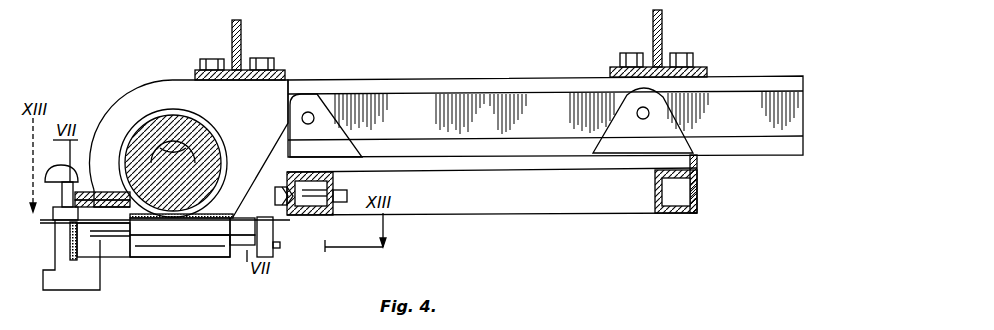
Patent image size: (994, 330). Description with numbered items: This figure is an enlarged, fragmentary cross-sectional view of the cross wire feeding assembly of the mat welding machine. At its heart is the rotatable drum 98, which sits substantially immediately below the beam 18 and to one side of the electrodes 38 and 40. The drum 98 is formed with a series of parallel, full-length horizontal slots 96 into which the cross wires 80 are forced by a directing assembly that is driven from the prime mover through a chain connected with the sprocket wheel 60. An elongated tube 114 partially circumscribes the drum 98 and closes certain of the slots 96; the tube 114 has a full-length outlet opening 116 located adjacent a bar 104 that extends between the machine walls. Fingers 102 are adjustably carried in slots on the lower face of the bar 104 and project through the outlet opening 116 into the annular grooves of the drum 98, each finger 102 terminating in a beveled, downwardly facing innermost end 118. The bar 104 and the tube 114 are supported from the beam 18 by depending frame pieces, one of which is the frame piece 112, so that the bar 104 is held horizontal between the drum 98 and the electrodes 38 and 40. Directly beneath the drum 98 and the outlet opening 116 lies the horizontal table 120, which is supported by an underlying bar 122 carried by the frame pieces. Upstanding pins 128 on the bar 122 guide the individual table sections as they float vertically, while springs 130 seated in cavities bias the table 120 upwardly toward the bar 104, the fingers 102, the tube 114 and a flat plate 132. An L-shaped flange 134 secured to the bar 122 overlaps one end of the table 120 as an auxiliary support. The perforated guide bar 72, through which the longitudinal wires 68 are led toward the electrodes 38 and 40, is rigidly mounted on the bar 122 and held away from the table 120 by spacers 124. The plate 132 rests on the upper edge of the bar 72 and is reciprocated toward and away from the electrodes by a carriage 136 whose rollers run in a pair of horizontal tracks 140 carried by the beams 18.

The beam 18 is at (241, 35).
The electrode 38 is at (56, 284).
The electrode 40 is at (62, 196).
The sprocket wheel 60 is at (62, 226).
The longitudinal wires 68 is at (100, 232).
The bar 72 is at (273, 228).
The cross wires 80 is at (185, 113).
The slot 96 is at (140, 128).
The drum 98 is at (200, 120).
The finger 102 is at (150, 248).
The bar 104 is at (58, 168).
The frame piece 112 is at (282, 96).
The tube 114 is at (213, 127).
The outlet opening 116 is at (107, 190).
The beveled end 118 is at (210, 206).
The table 120 is at (238, 247).
The bar 122 is at (165, 252).
The spacers 124 is at (262, 258).
The pins 128 is at (100, 252).
The springs 130 is at (50, 288).
The plate 132 is at (355, 232).
The L-shaped flange 134 is at (70, 245).
The carriage 136 is at (486, 185).
The tracks 140 is at (471, 72).